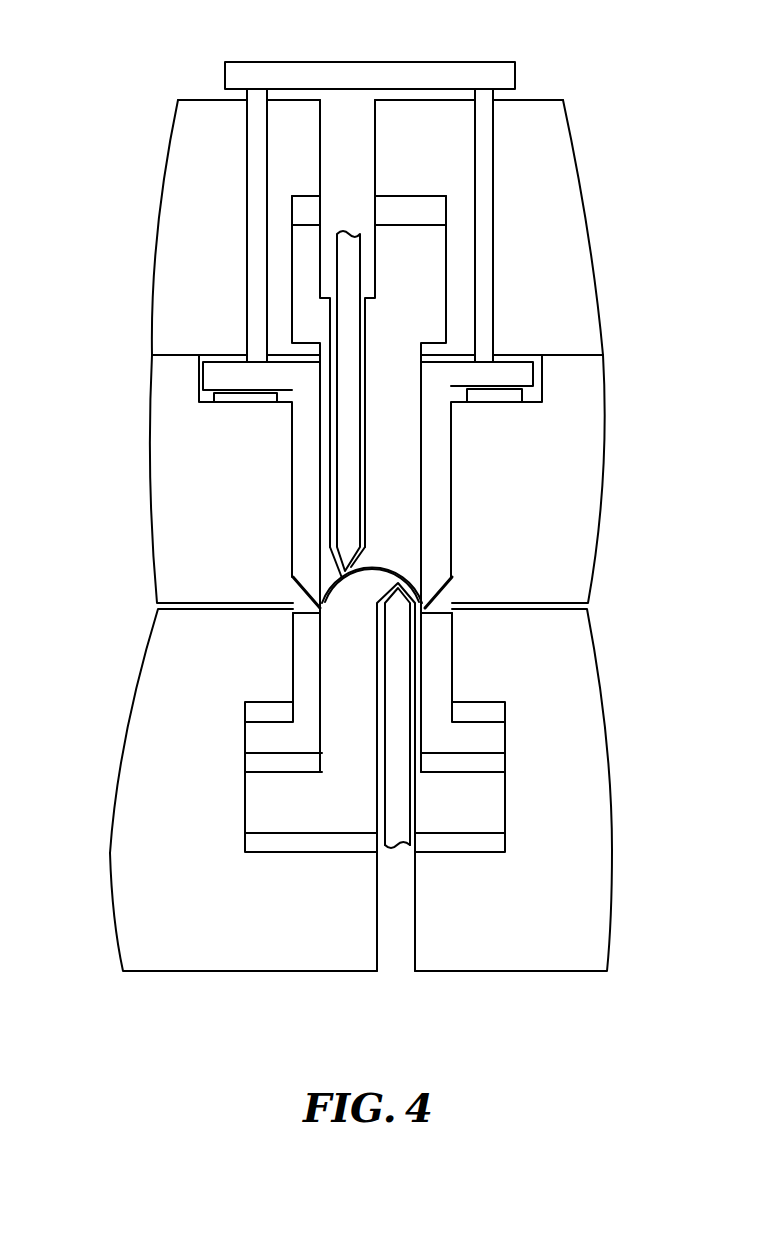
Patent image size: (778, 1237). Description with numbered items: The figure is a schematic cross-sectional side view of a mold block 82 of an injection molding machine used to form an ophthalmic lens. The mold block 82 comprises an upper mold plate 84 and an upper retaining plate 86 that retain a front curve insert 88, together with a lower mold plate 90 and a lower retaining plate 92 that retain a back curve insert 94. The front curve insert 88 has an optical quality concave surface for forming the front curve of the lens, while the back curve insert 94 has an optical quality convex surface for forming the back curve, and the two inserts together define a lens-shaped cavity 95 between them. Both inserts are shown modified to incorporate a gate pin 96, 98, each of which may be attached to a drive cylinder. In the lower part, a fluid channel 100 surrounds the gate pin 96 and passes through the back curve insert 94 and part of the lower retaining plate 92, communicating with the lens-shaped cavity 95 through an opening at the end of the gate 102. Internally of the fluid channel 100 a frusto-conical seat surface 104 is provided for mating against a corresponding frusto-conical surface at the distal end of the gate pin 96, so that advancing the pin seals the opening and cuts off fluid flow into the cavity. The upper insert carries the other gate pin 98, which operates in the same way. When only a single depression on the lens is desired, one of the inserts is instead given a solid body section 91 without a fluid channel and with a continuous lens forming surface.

The mold block 82 is at (652, 303).
The upper mold plate 84 is at (580, 408).
The upper retaining plate 86 is at (553, 135).
The front curve insert 88 is at (419, 256).
The lower mold plate 90 is at (578, 712).
The solid body section 91 is at (332, 468).
The lower retaining plate 92 is at (142, 902).
The back curve insert 94 is at (463, 798).
The lens-shaped cavity 95 is at (381, 567).
The gate pin 96 is at (398, 828).
The gate pin 98 is at (348, 252).
The fluid channel 100 is at (415, 828).
The gate 102 is at (390, 578).
The frusto-conical seat surface 104 is at (402, 612).